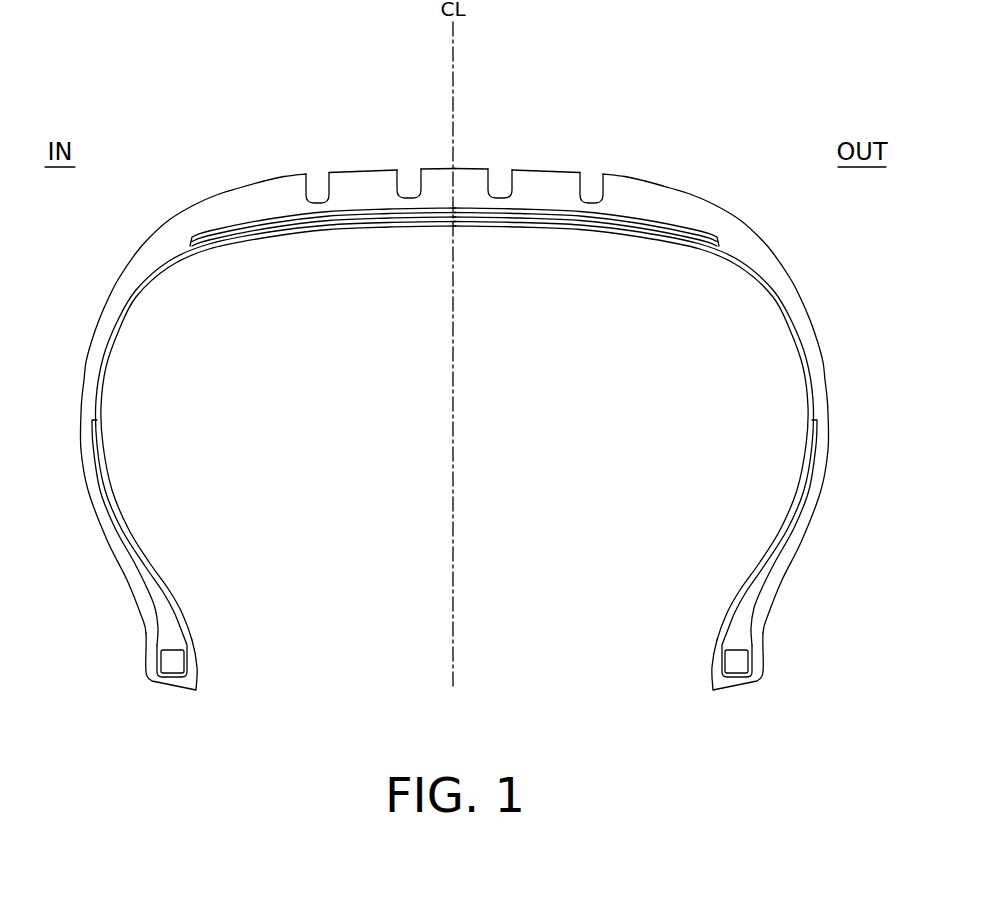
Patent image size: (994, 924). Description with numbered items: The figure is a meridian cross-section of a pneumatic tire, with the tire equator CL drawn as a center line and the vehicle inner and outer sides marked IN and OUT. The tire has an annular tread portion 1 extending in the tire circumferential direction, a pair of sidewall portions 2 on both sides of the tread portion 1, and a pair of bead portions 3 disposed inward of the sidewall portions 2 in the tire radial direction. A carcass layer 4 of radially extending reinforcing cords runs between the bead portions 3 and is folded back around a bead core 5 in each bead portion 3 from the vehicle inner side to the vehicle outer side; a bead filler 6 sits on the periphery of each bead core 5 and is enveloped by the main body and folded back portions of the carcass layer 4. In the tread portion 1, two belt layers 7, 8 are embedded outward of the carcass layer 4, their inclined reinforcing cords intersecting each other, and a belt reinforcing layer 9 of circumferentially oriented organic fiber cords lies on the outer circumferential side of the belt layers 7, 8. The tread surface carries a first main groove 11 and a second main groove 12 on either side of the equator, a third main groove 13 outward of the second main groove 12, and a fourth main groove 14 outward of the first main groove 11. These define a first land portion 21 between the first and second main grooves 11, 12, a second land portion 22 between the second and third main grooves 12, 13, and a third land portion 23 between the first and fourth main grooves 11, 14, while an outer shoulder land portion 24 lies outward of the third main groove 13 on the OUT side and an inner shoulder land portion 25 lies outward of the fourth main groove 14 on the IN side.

The tread portion 1 is at (441, 155).
The sidewall portions 2 is at (836, 392).
The bead portions 3 is at (776, 670).
The carcass layer 4 is at (553, 232).
The bead core 5 is at (735, 663).
The bead filler 6 is at (752, 606).
The belt layer 7 is at (618, 232).
The belt layer 8 is at (653, 240).
The belt reinforcing layer 9 is at (686, 248).
The first main groove 11 is at (408, 181).
The second main groove 12 is at (500, 181).
The third main groove 13 is at (590, 182).
The fourth main groove 14 is at (317, 180).
The first land portion 21 is at (465, 167).
The second land portion 22 is at (543, 170).
The third land portion 23 is at (368, 170).
The outer shoulder land portion 24 is at (628, 176).
The inner shoulder land portion 25 is at (270, 170).